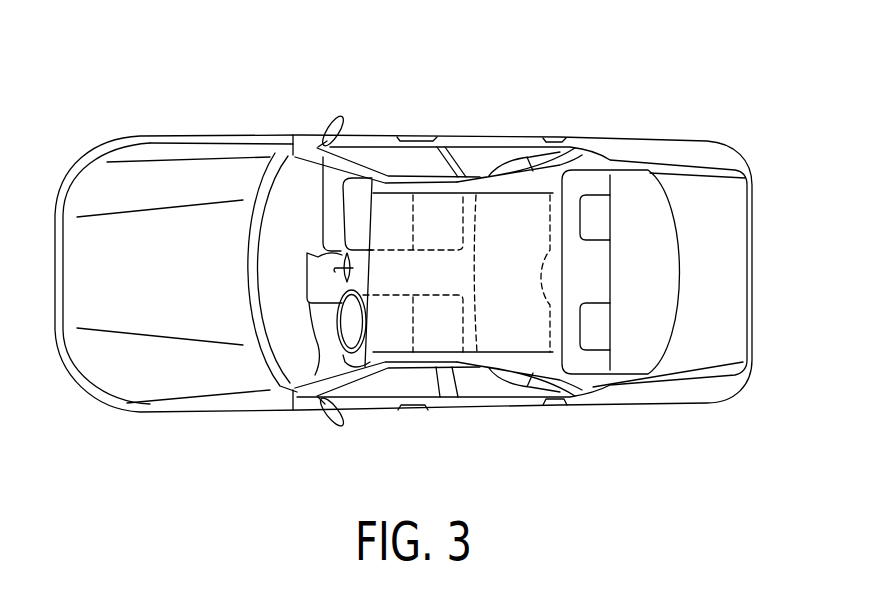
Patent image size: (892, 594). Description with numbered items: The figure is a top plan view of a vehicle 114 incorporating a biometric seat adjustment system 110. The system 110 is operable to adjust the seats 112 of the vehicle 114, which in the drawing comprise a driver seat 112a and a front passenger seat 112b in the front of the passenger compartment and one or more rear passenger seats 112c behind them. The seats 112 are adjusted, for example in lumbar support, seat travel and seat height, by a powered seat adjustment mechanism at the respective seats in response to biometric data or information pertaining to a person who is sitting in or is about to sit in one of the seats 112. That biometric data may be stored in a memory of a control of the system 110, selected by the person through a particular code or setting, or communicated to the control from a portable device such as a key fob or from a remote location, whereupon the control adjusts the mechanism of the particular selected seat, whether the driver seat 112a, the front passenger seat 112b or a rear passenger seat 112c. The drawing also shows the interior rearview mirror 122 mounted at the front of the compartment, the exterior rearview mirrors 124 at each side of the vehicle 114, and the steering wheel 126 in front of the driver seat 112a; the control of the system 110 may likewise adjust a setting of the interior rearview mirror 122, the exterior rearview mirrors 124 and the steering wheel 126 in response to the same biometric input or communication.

The biometric seat adjustment system 110 is at (414, 110).
The seats 112 is at (452, 212).
The driver seat 112a is at (410, 339).
The front passenger seat 112b is at (410, 235).
The rear passenger seats 112c is at (530, 285).
The vehicle 114 is at (207, 117).
The interior rearview mirror 122 is at (354, 268).
The exterior rearview mirrors 124 is at (337, 116).
The steering wheel 126 is at (338, 318).